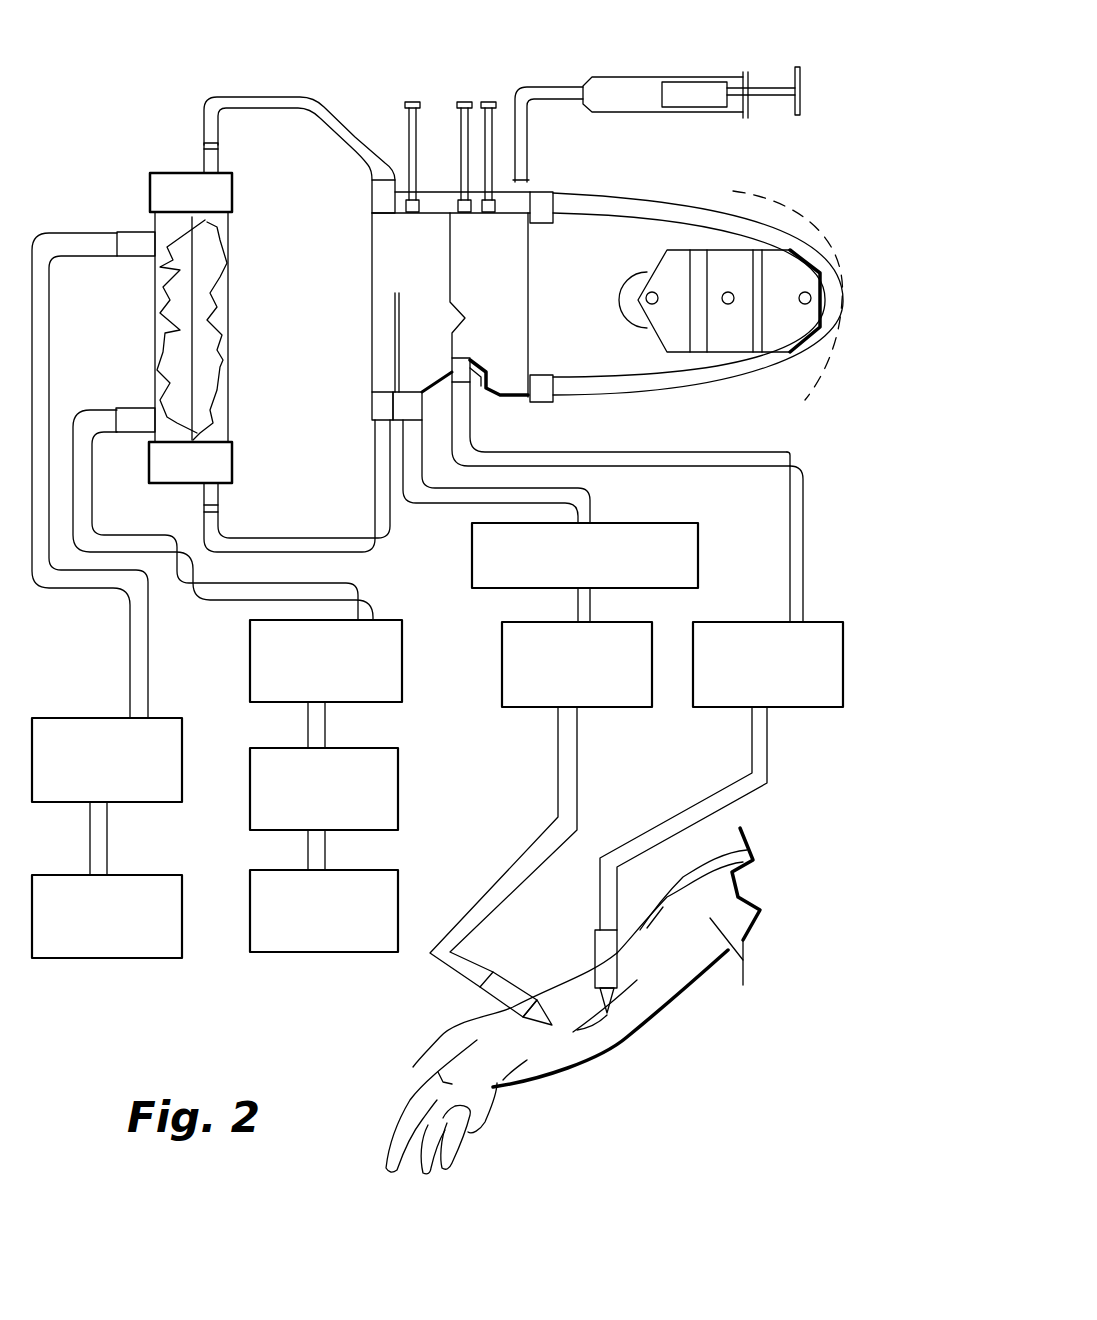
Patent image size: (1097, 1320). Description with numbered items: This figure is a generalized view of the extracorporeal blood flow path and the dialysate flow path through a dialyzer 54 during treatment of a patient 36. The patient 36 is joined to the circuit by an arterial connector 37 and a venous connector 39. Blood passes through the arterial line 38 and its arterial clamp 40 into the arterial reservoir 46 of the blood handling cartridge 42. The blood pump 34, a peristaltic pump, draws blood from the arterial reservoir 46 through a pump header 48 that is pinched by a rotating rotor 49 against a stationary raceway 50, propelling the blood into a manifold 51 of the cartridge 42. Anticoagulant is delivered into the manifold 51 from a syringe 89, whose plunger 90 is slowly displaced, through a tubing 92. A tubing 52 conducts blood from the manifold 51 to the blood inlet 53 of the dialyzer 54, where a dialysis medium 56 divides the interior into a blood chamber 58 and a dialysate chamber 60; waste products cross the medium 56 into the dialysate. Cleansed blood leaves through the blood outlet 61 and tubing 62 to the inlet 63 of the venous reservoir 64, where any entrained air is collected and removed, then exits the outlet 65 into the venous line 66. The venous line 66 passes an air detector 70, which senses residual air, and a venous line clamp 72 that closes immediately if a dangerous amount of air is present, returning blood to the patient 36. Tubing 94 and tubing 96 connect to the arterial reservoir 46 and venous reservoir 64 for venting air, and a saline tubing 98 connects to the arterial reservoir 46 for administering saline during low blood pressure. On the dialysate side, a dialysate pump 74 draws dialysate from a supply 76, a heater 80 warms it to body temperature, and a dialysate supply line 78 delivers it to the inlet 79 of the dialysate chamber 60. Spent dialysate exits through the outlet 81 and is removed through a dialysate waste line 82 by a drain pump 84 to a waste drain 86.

The blood pump 34 is at (708, 240).
The patient 36 is at (580, 1058).
The arterial connector 37 is at (593, 953).
The arterial line 38 is at (658, 452).
The venous connector 39 is at (487, 990).
The arterial clamp 40 is at (833, 623).
The blood handling cartridge 42 is at (545, 266).
The arterial reservoir 46 is at (508, 315).
The pump header 48 is at (585, 388).
The rotor 49 is at (667, 330).
The raceway 50 is at (810, 400).
The manifold 51 is at (437, 192).
The tubing 52 is at (308, 108).
The blood inlet 53 is at (208, 162).
The dialyzer 54 is at (236, 252).
The dialysis medium 56 is at (200, 302).
The blood chamber 58 is at (207, 370).
The dialysate chamber 60 is at (175, 335).
The blood outlet 61 is at (217, 497).
The tubing 62 is at (325, 542).
The inlet 63 is at (377, 405).
The venous reservoir 64 is at (388, 245).
The outlet 65 is at (422, 408).
The venous line 66 is at (447, 497).
The air detector 70 is at (643, 532).
The venous line clamp 72 is at (630, 695).
The dialysate pump 74 is at (380, 812).
The dialysate supply 76 is at (380, 947).
The dialysate supply line 78 is at (120, 540).
The inlet 79 is at (138, 423).
The heater 80 is at (383, 686).
The outlet 81 is at (133, 240).
The dialysate waste line 82 is at (37, 530).
The drain pump 84 is at (155, 792).
The waste drain 86 is at (158, 950).
The syringe 89 is at (623, 82).
The plunger 90 is at (763, 93).
The tubing 92 is at (553, 93).
The tubing 94 is at (487, 100).
The tubing 96 is at (402, 107).
The saline tubing 98 is at (463, 100).